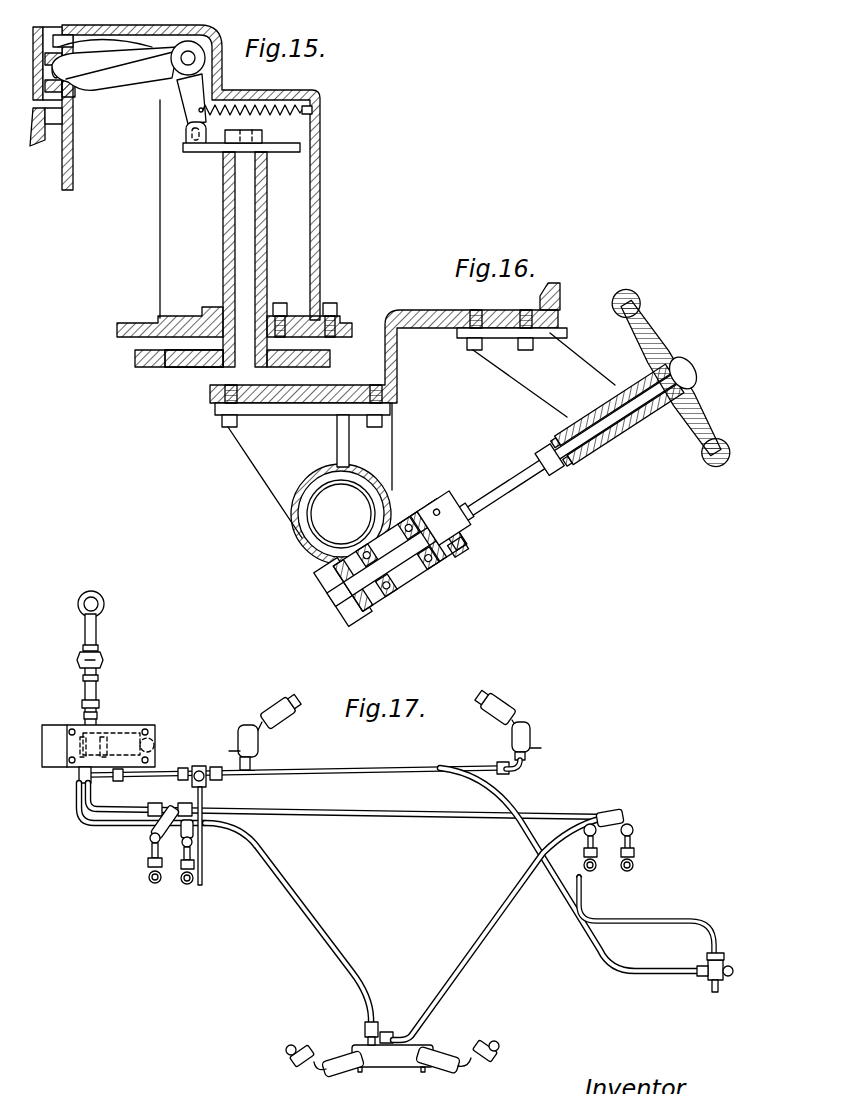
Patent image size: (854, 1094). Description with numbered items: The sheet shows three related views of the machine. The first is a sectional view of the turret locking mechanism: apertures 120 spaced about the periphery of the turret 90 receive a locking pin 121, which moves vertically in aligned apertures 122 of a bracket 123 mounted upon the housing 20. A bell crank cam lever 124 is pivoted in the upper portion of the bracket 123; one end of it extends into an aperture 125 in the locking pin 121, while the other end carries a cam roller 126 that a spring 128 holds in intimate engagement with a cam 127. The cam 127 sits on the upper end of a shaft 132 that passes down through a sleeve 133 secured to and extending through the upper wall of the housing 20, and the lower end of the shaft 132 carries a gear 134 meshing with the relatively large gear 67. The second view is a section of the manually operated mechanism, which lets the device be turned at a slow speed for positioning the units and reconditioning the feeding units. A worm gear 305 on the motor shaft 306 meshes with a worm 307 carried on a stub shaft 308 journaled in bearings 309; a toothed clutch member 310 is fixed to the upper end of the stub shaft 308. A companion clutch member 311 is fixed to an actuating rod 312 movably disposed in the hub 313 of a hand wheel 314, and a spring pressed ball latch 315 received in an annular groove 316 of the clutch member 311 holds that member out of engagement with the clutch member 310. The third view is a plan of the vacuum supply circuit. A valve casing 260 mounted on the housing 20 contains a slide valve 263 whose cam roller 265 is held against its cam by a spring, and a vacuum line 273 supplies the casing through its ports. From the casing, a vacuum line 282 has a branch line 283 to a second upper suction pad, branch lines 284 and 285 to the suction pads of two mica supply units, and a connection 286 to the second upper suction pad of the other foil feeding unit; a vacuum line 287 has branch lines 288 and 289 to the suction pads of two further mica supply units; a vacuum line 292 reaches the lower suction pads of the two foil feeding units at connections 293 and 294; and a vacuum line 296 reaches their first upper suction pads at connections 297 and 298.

In FIG. 15, the housing 20 is at (345, 320).
In FIG. 16, the housing 20 is at (500, 298).
In FIG. 15, the large gear 67 is at (135, 358).
In FIG. 15, the turret 90 is at (74, 180).
In FIG. 15, the apertures 120 is at (70, 120).
In FIG. 15, the locking pin 121 is at (58, 116).
In FIG. 15, the aligned apertures 122 is at (171, 58).
In FIG. 15, the bracket 123 is at (277, 90).
In FIG. 15, the bell crank cam lever 124 is at (152, 74).
In FIG. 15, the aperture 125 is at (62, 66).
In FIG. 15, the cam roller 126 is at (186, 149).
In FIG. 15, the cam 127 is at (217, 152).
In FIG. 15, the spring 128 is at (273, 112).
In FIG. 15, the shaft 132 is at (245, 220).
In FIG. 15, the sleeve 133 is at (223, 256).
In FIG. 15, the gear 134 is at (182, 360).
In FIG. 16, the worm gear 305 is at (310, 518).
In FIG. 16, the motor shaft 306 is at (333, 531).
In FIG. 16, the worm 307 is at (390, 594).
In FIG. 16, the stub shaft 308 is at (345, 582).
In FIG. 16, the bearings 309 is at (358, 594).
In FIG. 16, the toothed clutch member 310 is at (413, 518).
In FIG. 16, the companion clutch member 311 is at (457, 528).
In FIG. 16, the actuating rod 312 is at (490, 470).
In FIG. 16, the hub 313 is at (610, 442).
In FIG. 16, the hand wheel 314 is at (713, 452).
In FIG. 16, the spring pressed ball latch 315 is at (460, 540).
In FIG. 16, the annular groove 316 is at (467, 497).
In FIG. 17, the valve casing 260 is at (125, 727).
In FIG. 17, the slide valve 263 is at (120, 740).
In FIG. 17, the cam roller 265 is at (155, 745).
In FIG. 17, the vacuum line 273 is at (95, 631).
In FIG. 17, the vacuum line 282 is at (100, 824).
In FIG. 17, the branch line 283 is at (181, 869).
In FIG. 17, the branch line 284 is at (467, 1053).
In FIG. 17, the branch line 285 is at (312, 1053).
In FIG. 17, the connection to second upper suction pad 286 is at (607, 823).
In FIG. 17, the vacuum line 287 is at (415, 778).
In FIG. 17, the branch line 288 is at (257, 712).
In FIG. 17, the branch line 289 is at (543, 700).
In FIG. 17, the vacuum line 292 is at (508, 798).
In FIG. 17, the connection to lower suction pad 293 is at (203, 853).
In FIG. 17, the connection to lower suction pad 294 is at (583, 893).
In FIG. 17, the vacuum line 296 is at (343, 809).
In FIG. 17, the connection to first upper suction pad 297 is at (145, 855).
In FIG. 17, the connection to first upper suction pad 298 is at (630, 840).